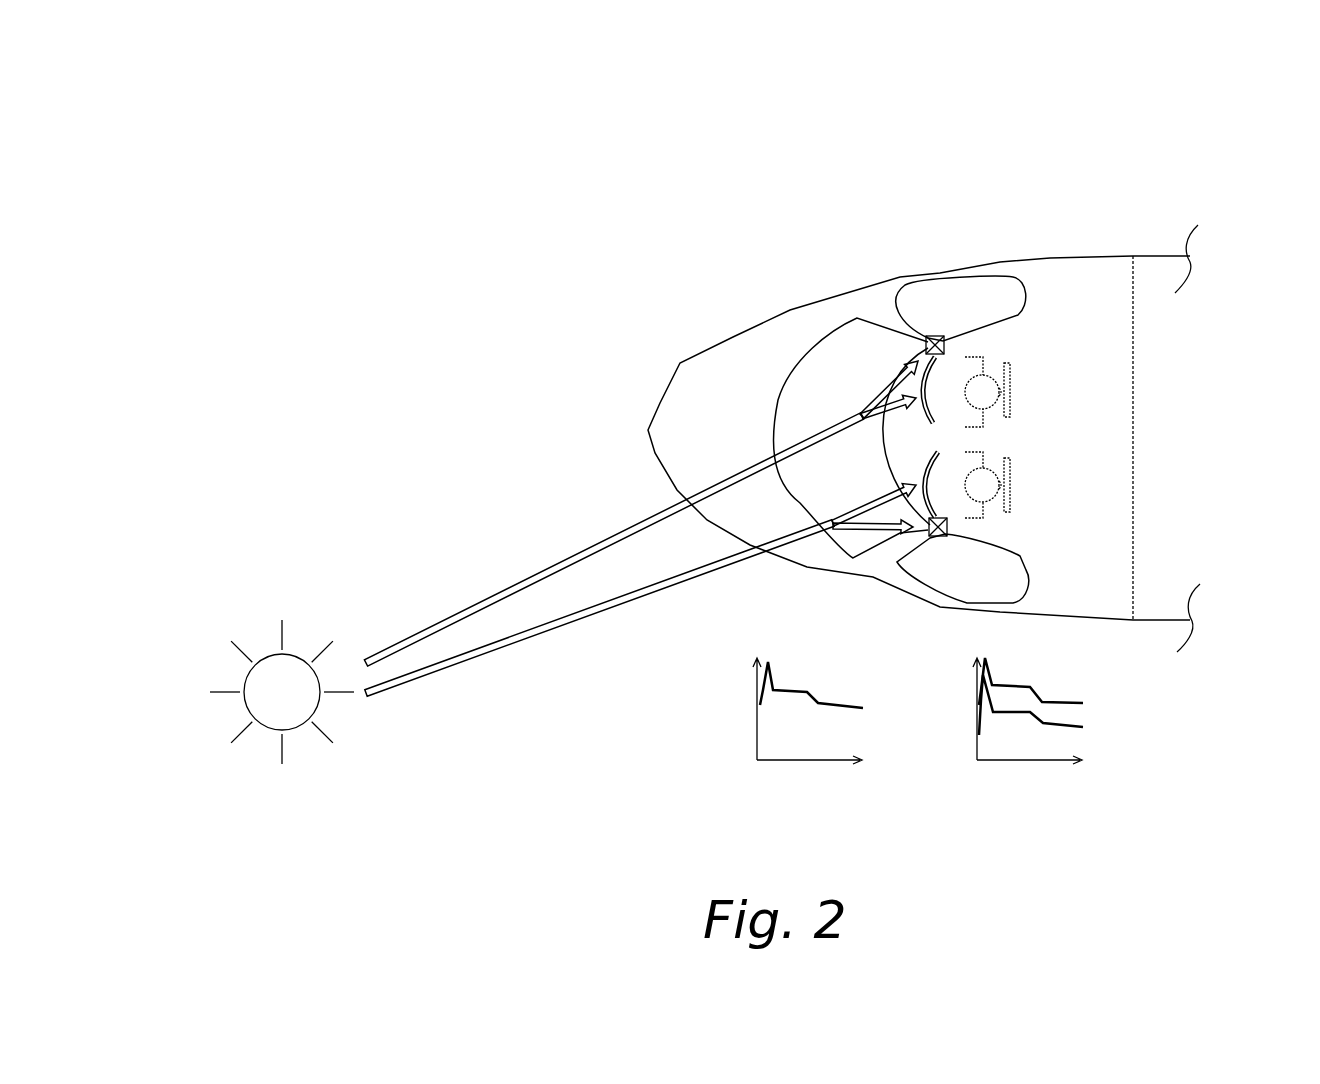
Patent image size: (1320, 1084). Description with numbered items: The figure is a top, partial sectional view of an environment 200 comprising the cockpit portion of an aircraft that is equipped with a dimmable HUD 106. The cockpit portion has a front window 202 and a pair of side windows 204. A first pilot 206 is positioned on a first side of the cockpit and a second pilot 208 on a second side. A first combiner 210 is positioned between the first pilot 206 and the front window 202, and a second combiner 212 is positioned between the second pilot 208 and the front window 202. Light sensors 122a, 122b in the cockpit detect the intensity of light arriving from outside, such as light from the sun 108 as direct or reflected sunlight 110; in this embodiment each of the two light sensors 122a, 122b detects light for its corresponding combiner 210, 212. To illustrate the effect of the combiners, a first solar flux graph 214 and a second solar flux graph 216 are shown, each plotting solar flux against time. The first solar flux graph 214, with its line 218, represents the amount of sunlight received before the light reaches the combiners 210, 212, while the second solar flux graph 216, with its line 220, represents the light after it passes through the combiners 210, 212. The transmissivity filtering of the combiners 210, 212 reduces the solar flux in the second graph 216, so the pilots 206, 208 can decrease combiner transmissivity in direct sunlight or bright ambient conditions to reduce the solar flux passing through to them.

The environment 200 is at (264, 112).
The dimmable HUD 106 is at (734, 336).
The front window 202 is at (820, 340).
The light sensor 122a is at (930, 337).
The light sensor 122b is at (930, 540).
The side windows 204 is at (957, 280).
The first combiner 210 is at (943, 354).
The second combiner 212 is at (940, 450).
The first pilot 206 is at (1010, 370).
The second pilot 208 is at (1010, 483).
The sun 108 is at (268, 653).
The sunlight 110 is at (475, 613).
The first solar flux graph 214 is at (740, 803).
The second solar flux graph 216 is at (1118, 798).
The line 218 is at (853, 706).
The line 220 is at (1068, 727).